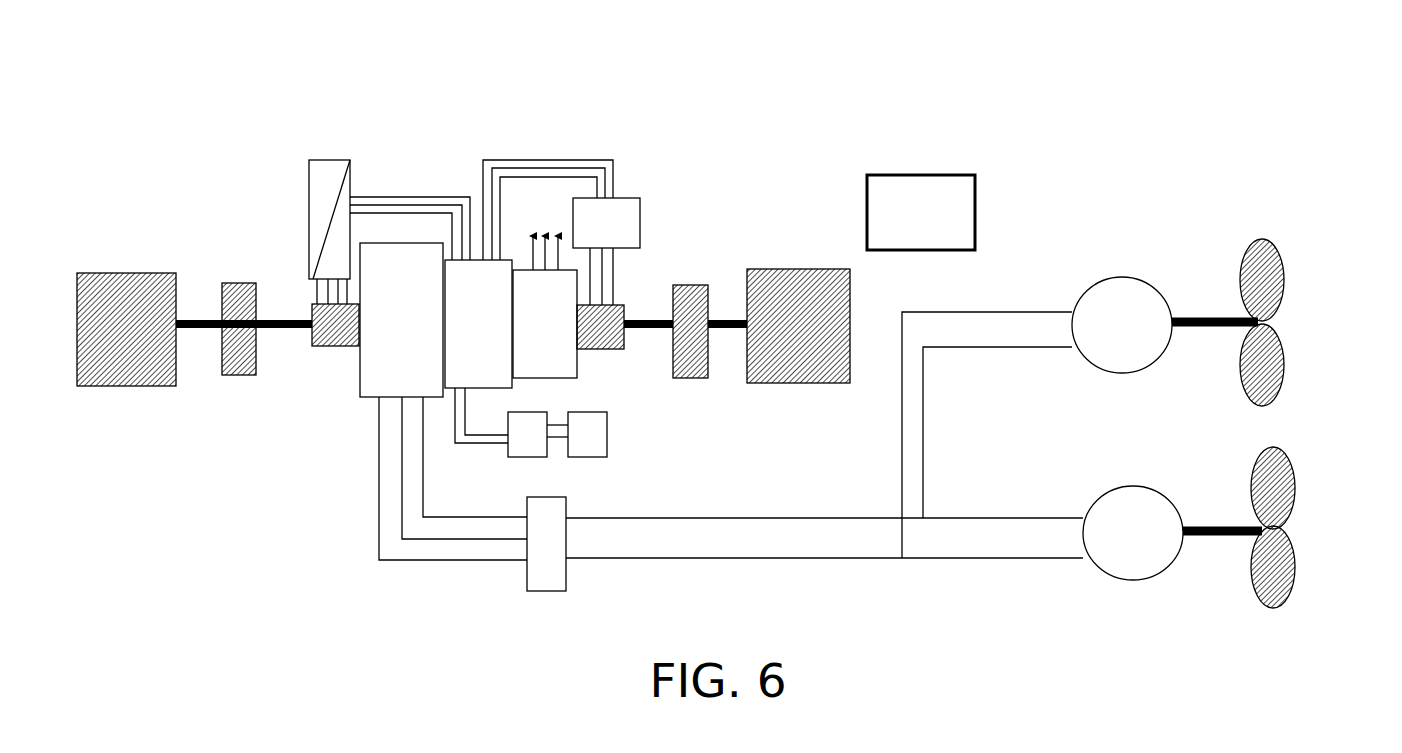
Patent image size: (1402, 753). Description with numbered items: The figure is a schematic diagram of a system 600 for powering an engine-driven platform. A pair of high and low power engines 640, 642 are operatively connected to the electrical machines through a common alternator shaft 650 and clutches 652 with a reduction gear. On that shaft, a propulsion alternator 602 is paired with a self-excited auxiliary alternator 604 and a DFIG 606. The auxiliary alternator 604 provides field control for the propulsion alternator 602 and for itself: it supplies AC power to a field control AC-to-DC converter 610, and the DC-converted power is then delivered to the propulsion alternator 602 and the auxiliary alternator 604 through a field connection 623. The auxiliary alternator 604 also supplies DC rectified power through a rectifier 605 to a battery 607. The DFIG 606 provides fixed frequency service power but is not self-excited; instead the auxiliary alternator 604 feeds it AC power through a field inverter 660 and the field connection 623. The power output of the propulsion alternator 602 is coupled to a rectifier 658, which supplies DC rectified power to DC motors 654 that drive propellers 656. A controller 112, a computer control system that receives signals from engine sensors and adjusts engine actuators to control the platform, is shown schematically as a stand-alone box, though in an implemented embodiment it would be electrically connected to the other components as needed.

The system 600 is at (825, 82).
The low power engine 642 is at (113, 377).
The common alternator shaft 650 is at (290, 330).
The clutches 652 is at (240, 283).
The field connection 623 is at (350, 347).
The field control AC-to-DC converter 610 is at (337, 158).
The propulsion alternator 602 is at (373, 390).
The self-excited auxiliary alternator 604 is at (529, 301).
The DFIG 606 is at (545, 307).
The field inverter 660 is at (640, 218).
The rectifier 605 is at (505, 452).
The battery 607 is at (607, 455).
The high power engine 640 is at (785, 373).
The controller 112 is at (921, 212).
The rectifier 658 is at (566, 575).
The DC motors 654 is at (1145, 353).
The propellers 656 is at (1288, 352).